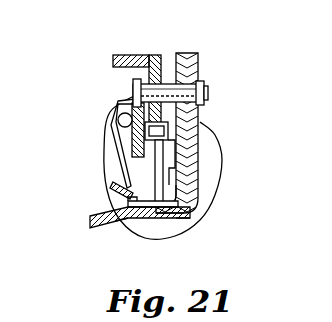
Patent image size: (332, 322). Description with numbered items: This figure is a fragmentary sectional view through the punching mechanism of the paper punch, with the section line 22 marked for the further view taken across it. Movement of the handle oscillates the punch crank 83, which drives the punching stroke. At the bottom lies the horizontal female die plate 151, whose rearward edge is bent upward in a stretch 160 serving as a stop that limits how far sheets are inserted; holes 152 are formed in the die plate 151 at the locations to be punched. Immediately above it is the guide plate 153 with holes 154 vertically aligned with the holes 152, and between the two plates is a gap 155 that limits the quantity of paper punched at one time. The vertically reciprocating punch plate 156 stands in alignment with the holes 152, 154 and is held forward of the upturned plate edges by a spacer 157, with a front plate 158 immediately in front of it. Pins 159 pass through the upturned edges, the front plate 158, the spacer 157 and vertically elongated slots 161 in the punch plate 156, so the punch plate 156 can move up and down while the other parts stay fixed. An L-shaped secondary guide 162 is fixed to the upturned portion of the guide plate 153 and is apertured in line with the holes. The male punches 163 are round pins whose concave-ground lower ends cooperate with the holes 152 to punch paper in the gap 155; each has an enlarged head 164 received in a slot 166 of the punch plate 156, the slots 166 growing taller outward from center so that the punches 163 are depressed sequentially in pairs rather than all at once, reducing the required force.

The section line 22— 22 is at (163, 11).
The punch crank 83 is at (108, 158).
The female die plate 151 is at (128, 220).
The holes 152 is at (199, 222).
The guide plate 153 is at (205, 207).
The holes 154 is at (126, 205).
The gap 155 is at (92, 222).
The punch plate 156 is at (176, 120).
The spacer 157 is at (199, 68).
The front plate 158 is at (133, 141).
The pins 159 is at (209, 87).
The stretch 160 is at (207, 192).
The vertically elongated slots 161 is at (156, 77).
The L-shaped secondary guide 162 is at (164, 172).
The male punches 163 is at (118, 186).
The enlarged head 164 is at (117, 117).
The slot 166 is at (199, 124).